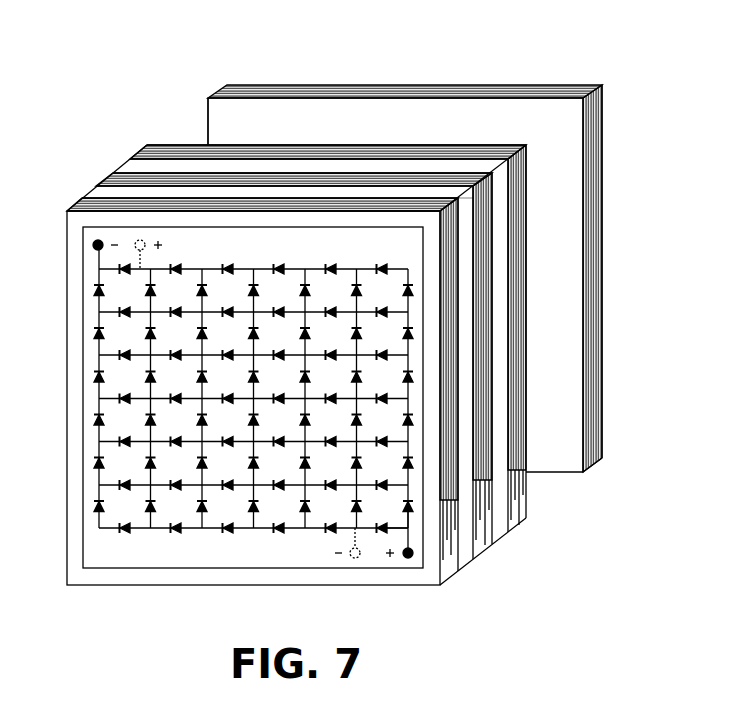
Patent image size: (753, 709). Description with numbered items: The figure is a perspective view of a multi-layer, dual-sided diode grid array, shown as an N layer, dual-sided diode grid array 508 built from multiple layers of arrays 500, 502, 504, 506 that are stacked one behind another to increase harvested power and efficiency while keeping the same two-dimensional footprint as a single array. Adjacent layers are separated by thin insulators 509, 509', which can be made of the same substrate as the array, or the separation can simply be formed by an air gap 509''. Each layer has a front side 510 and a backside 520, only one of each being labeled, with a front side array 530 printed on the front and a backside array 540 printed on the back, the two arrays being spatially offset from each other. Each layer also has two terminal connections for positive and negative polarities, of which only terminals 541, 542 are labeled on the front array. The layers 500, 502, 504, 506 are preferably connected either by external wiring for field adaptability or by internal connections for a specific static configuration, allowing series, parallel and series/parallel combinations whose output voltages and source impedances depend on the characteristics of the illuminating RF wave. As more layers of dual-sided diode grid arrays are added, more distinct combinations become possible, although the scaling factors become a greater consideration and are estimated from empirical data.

The array layer 500 is at (77, 204).
The array layer 502 is at (112, 172).
The array layer 504 is at (146, 146).
The array layer 506 is at (214, 95).
The N layer dual-sided diode grid array 508 is at (624, 123).
The thin insulator 509 is at (254, 146).
The thin insulator 509' is at (286, 114).
The air gap 509'' is at (162, 89).
The front side 510 is at (82, 269).
The backside 520 is at (122, 235).
The front side array 530 is at (428, 528).
The backside array 540 is at (341, 539).
The terminal 541 is at (357, 560).
The terminal 542 is at (408, 559).